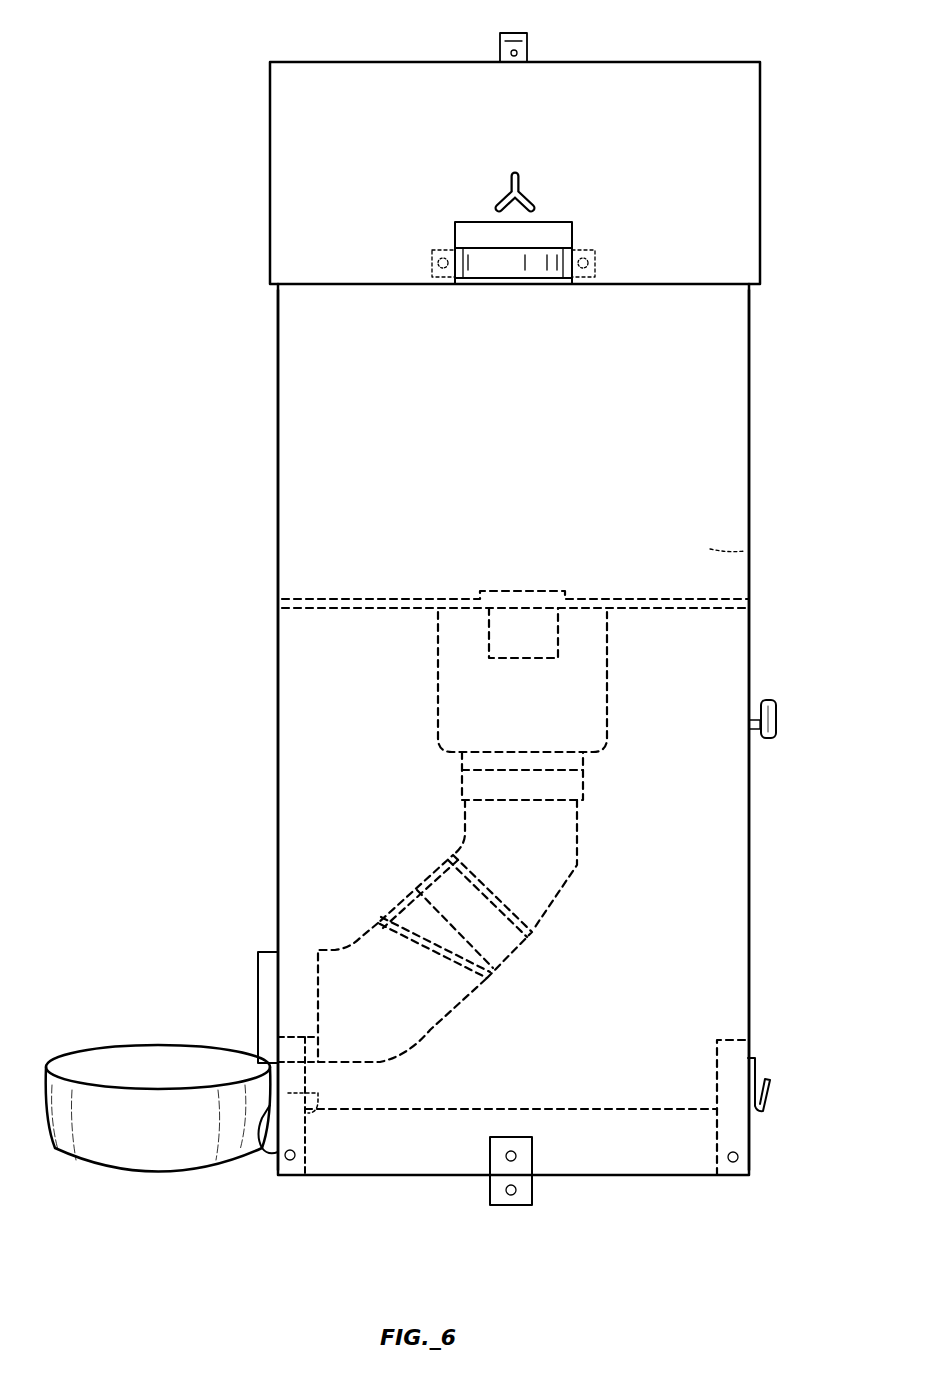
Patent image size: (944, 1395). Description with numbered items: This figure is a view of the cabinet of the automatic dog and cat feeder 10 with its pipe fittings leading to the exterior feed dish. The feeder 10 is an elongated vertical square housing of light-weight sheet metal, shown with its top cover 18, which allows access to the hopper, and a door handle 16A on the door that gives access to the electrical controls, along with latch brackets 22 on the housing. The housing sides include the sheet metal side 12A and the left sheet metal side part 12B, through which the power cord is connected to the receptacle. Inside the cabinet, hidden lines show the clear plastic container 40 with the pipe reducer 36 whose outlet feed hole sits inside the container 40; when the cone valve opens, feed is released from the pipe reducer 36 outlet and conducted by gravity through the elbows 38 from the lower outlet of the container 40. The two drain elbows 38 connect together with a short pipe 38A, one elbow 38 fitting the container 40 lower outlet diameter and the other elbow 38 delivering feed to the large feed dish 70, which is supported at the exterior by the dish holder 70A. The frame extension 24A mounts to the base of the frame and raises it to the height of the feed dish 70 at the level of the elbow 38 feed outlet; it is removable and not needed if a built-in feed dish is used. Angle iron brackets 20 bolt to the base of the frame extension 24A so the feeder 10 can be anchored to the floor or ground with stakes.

The automatic dog and cat feeder 10 is at (248, 412).
The sheet metal side 12A is at (749, 550).
The left sheet metal side part 12B is at (315, 548).
The door handle 16A is at (515, 178).
The top cover 18 is at (288, 100).
The angle iron bracket 20 is at (535, 1153).
The latch bracket 22 is at (520, 34).
The frame extension 24A is at (342, 1158).
The pipe reducer 36 is at (490, 628).
The elbow 38 is at (577, 867).
The short pipe 38A is at (513, 948).
The container 40 is at (438, 710).
The feed dish 70 is at (180, 1055).
The dish holder 70A is at (268, 1150).